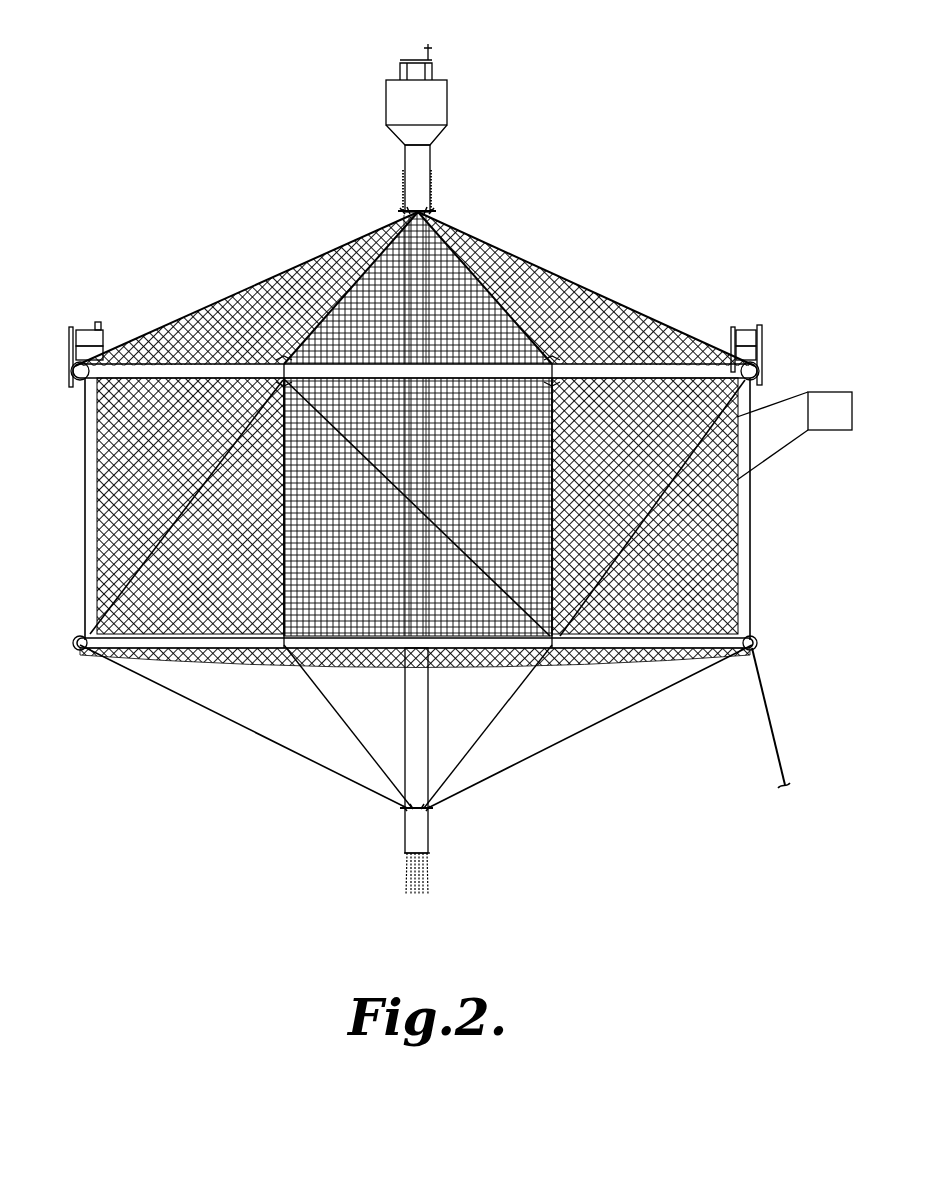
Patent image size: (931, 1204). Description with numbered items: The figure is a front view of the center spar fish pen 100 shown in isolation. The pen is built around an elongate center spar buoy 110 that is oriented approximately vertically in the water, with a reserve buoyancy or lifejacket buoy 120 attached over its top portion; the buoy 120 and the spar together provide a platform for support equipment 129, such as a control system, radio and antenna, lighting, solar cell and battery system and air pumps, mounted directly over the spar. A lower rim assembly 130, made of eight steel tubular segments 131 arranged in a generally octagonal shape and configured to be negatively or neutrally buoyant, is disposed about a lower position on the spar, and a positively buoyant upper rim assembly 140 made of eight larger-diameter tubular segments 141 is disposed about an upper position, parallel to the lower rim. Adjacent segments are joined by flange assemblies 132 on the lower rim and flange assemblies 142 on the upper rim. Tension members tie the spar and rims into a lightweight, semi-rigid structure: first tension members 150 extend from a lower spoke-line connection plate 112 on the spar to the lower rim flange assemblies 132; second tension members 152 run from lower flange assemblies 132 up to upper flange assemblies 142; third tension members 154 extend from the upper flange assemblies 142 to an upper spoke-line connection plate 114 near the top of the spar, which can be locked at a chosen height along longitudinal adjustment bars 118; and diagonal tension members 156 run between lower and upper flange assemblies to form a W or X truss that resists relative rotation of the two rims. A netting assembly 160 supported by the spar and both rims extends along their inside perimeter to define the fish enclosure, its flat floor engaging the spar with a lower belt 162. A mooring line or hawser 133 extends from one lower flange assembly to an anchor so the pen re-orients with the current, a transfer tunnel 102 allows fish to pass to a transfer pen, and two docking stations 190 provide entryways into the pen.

The fish pen 100 is at (643, 198).
The transfer tunnel 102 is at (798, 445).
The center spar buoy 110 is at (436, 175).
The lower spoke-line connection plate 112 is at (433, 809).
The upper spoke-line connection plate 114 is at (436, 210).
The longitudinal adjustment bars 118 is at (404, 193).
The reserve buoyancy buoy 120 is at (452, 100).
The support equipment 129 is at (416, 52).
The lower rim assembly 130 is at (683, 656).
The tubular segments 131 is at (157, 643).
The flange assemblies 132 is at (84, 650).
The mooring line 133 is at (772, 733).
The upper rim assembly 140 is at (675, 361).
The tubular segments 141 is at (143, 367).
The flange assemblies 142 is at (78, 392).
The first tension members 150 is at (210, 708).
The second tension members 152 is at (85, 495).
The third tension members 154 is at (352, 284).
The diagonal tension members 156 is at (138, 572).
The netting assembly 160 is at (577, 300).
The lower belt 162 is at (414, 660).
The docking station 190 is at (83, 326).